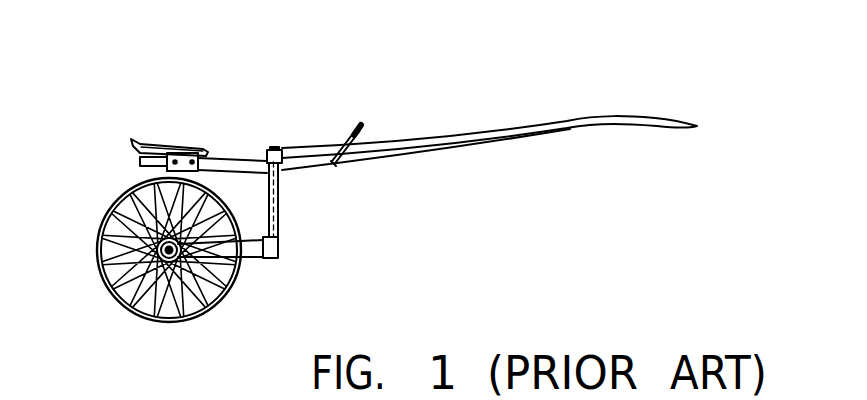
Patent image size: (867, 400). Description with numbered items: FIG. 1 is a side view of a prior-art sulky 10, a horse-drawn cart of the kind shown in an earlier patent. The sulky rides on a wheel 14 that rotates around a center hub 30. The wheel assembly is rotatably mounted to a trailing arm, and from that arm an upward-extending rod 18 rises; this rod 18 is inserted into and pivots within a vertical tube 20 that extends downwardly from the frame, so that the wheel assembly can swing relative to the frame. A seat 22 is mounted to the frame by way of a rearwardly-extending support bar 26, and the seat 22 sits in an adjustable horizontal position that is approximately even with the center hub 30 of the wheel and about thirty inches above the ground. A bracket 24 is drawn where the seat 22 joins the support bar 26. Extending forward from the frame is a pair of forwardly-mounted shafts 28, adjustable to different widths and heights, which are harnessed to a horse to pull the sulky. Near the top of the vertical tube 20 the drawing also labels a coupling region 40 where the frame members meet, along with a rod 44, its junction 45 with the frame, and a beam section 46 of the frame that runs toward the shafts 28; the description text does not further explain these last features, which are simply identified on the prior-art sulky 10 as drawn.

The prior art cart 10 is at (400, 205).
The wheel 14 is at (97, 257).
The upward-extending rod 18 is at (280, 188).
The vertical tube 20 is at (280, 223).
The seat 22 is at (138, 147).
The bracket 24 is at (207, 155).
The rearwardly-extending support bar 26 is at (256, 158).
The forwardly-mounted shafts 28 is at (567, 120).
The center hub 30 is at (167, 262).
The coupling assembly 40 is at (266, 122).
The lever rod 44 is at (367, 124).
The rod junction 45 is at (334, 164).
The beam section 46 is at (314, 147).